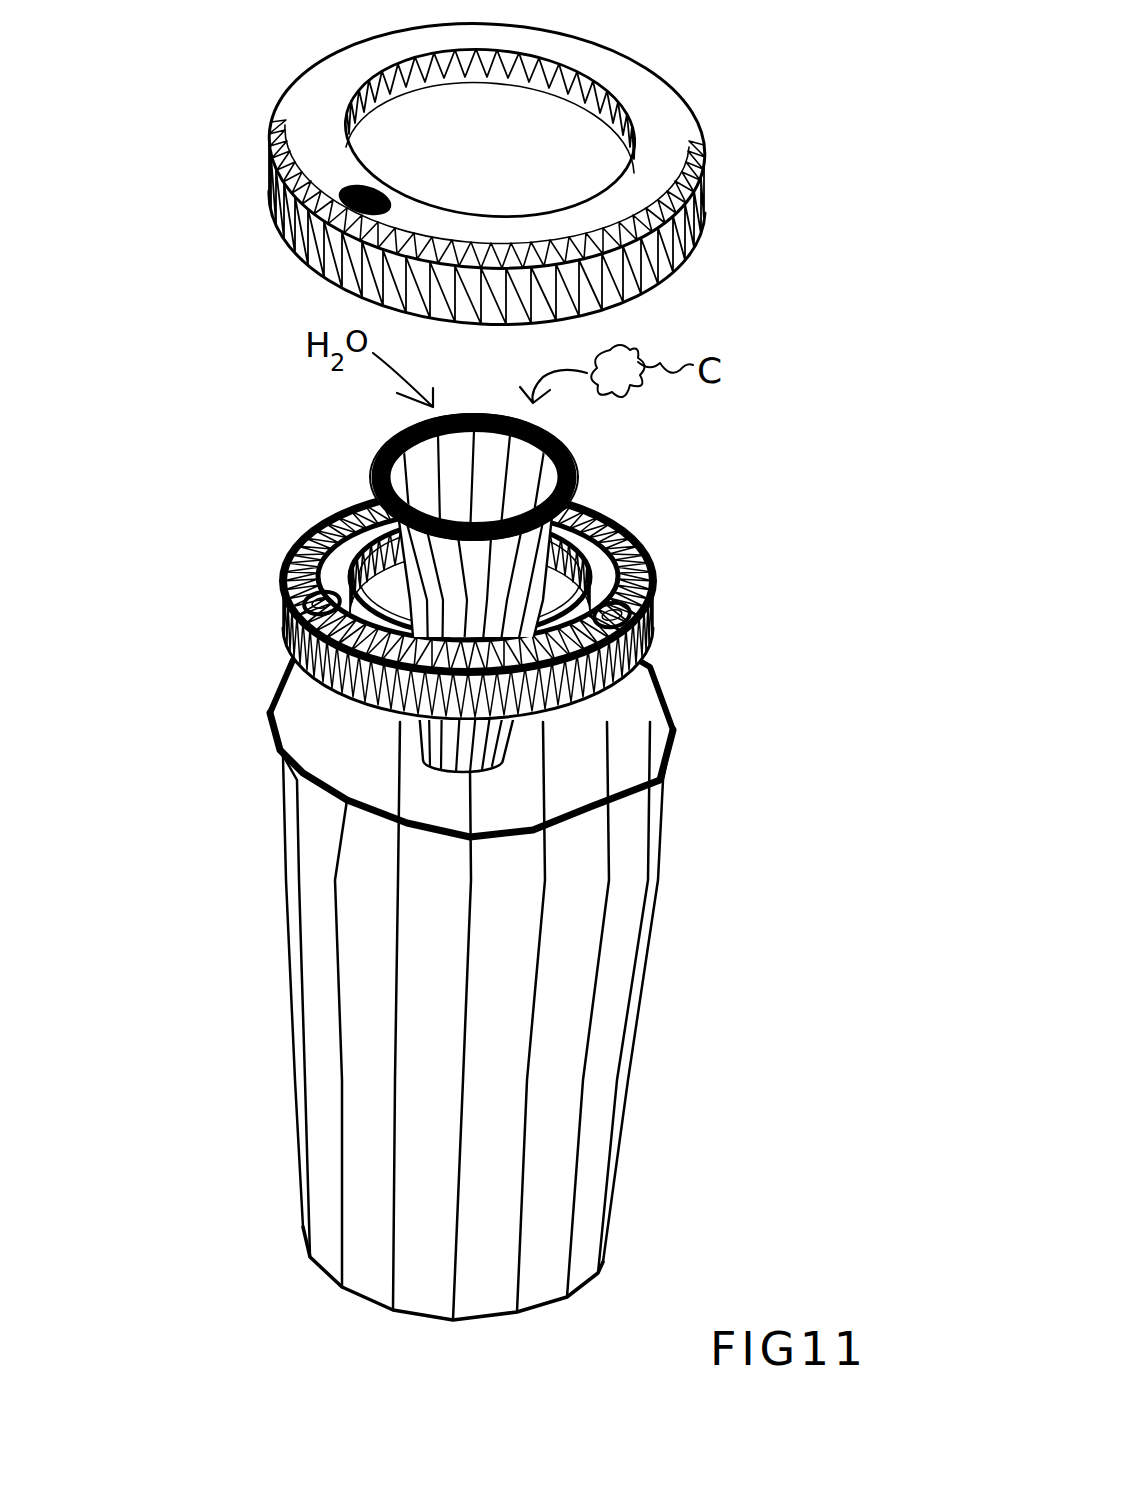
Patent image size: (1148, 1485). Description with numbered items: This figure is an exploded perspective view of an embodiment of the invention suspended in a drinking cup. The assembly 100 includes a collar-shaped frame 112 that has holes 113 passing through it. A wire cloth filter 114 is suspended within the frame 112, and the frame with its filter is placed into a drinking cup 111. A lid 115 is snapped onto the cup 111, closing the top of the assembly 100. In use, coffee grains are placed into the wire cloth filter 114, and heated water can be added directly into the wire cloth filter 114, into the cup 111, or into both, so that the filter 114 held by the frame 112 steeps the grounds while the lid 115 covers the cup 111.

The assembly 100 is at (502, 666).
The drinking cup 111 is at (335, 1062).
The collar-shaped frame 112 is at (297, 535).
The holes 113 is at (297, 577).
The wire cloth filter 114 is at (450, 483).
The lid 115 is at (575, 158).